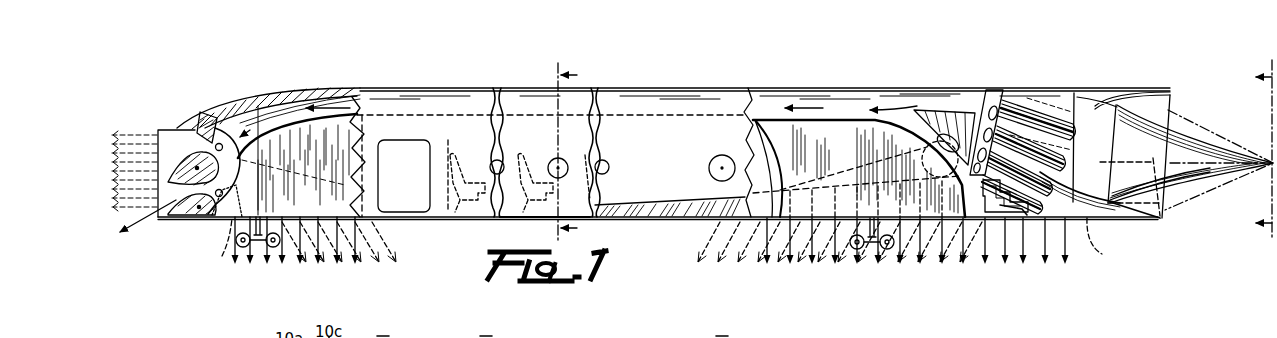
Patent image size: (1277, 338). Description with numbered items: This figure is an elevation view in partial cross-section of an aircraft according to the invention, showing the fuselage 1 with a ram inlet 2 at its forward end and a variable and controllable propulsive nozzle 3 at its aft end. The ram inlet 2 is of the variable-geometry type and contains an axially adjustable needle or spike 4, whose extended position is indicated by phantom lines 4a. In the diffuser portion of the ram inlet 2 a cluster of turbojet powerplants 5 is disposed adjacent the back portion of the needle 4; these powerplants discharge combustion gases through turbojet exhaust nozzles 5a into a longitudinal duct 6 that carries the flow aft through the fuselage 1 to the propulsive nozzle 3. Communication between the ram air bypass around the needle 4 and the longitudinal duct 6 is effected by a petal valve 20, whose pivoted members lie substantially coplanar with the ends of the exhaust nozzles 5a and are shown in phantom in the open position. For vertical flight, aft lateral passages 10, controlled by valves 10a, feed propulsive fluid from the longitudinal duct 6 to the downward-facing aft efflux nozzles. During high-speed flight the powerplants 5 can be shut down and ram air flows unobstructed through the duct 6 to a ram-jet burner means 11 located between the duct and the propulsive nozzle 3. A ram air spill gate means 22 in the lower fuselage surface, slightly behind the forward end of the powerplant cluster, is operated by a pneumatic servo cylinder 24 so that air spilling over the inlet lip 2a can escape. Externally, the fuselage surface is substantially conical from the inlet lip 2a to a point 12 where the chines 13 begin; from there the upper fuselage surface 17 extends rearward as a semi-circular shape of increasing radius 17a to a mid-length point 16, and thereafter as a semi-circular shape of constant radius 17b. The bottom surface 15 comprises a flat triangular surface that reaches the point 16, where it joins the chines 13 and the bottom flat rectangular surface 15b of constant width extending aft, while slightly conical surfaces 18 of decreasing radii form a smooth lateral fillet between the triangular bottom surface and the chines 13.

The fuselage 1 is at (684, 56).
The ram inlet 2 is at (1141, 95).
The inlet lip 2a is at (1160, 219).
The propulsive nozzle 3 is at (167, 129).
The needle or spike 4 is at (1172, 138).
The phantom lines 4a is at (1200, 131).
The turbojet powerplants 5 is at (1026, 100).
The turbojet exhaust nozzles 5a is at (991, 100).
The longitudinal duct 6 is at (858, 75).
The aft lateral passages 10 is at (224, 218).
The valves 10a is at (217, 243).
The ram-jet burner means 11 is at (218, 138).
The point 12 is at (1162, 170).
The chines 13 is at (682, 200).
The bottom surface 15 is at (710, 226).
The bottom flat rectangular surface 15b is at (462, 219).
The point 16 is at (551, 218).
The upper fuselage surface 17 is at (429, 87).
The semi-circular shape of increasing radius 17a is at (742, 87).
The semi-circular shape of constant radius 17b is at (528, 87).
The slightly conical surfaces 18 is at (676, 218).
The petal valve 20 is at (934, 113).
The ram air spill gate means 22 is at (1017, 230).
The pneumatic servo cylinder 24 is at (1003, 212).